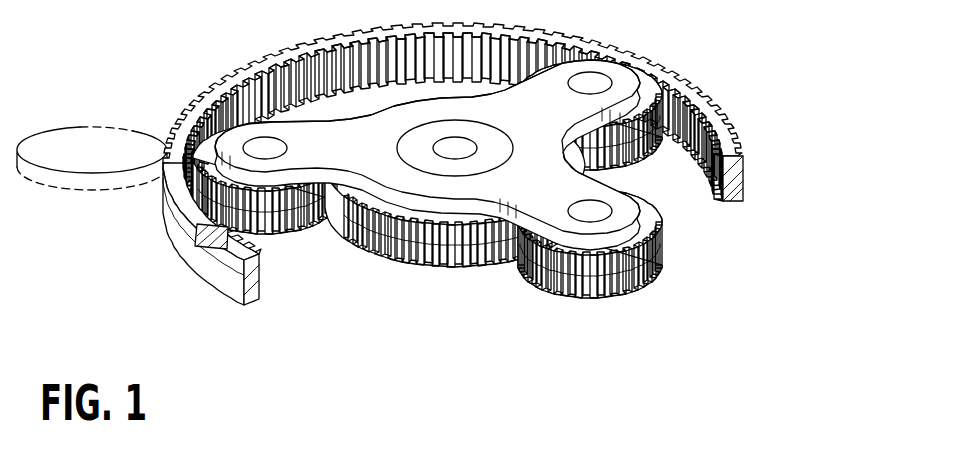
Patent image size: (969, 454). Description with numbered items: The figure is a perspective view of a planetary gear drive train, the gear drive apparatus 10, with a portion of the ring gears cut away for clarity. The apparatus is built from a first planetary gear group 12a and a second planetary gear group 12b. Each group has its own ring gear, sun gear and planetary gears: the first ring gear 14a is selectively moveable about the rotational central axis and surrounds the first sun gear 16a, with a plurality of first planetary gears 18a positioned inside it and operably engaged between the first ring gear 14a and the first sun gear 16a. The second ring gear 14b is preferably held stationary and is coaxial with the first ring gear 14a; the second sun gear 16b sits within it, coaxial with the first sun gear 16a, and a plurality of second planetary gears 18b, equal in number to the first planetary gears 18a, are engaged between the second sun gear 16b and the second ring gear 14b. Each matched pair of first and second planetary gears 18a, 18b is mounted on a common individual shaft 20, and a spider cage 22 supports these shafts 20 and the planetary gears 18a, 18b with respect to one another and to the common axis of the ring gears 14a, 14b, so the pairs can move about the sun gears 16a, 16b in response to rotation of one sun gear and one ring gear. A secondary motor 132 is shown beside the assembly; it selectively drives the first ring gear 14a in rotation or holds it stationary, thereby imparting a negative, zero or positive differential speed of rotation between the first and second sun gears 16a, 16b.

The gear drive apparatus 10 is at (706, 34).
The first planetary gear group 12a is at (721, 107).
The second planetary gear group 12b is at (747, 190).
The first ring gear 14a is at (257, 72).
The second ring gear 14b is at (233, 262).
The first sun gear 16a is at (373, 227).
The second sun gear 16b is at (433, 253).
The first planetary gear 18a is at (663, 221).
The second planetary gear 18b is at (650, 282).
The common individual shaft 20 is at (598, 190).
The spider cage 22 is at (330, 142).
The secondary motor 132 is at (88, 127).